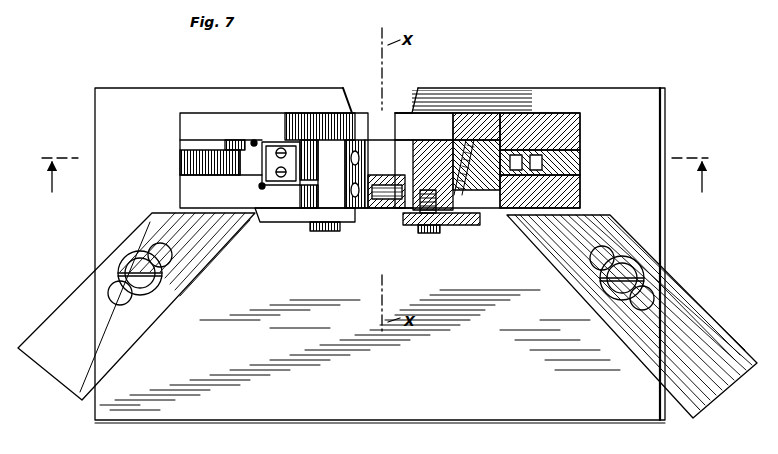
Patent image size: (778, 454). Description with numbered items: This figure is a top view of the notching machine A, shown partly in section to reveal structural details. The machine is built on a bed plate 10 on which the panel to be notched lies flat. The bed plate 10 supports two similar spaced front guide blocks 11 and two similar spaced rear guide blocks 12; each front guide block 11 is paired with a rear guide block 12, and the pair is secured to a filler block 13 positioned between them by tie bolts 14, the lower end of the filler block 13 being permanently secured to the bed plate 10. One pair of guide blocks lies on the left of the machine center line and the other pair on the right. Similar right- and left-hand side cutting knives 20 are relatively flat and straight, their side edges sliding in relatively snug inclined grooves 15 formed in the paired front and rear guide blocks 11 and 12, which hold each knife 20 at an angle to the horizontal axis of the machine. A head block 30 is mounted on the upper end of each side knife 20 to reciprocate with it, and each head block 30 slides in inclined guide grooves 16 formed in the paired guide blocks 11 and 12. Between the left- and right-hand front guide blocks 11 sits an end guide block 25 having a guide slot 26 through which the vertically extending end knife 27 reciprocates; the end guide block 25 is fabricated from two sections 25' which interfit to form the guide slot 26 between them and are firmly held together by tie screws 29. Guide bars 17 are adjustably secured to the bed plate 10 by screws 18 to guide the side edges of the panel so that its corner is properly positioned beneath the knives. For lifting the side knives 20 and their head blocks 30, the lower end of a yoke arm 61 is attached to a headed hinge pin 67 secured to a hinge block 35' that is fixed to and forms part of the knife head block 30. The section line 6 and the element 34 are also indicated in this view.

The bed plate 10 is at (352, 428).
The front guide block 11 is at (185, 187).
The rear guide block 12 is at (180, 122).
The filler block 13 is at (185, 157).
The tie bolt 14 is at (543, 128).
The inclined groove 15 is at (270, 140).
The inclined guide groove 16 is at (224, 140).
The guide bar 17 is at (70, 308).
The screw 18 is at (120, 262).
The side cutting knife 20 is at (500, 213).
The end guide block 25 is at (417, 191).
The section 25' is at (431, 196).
The guide slot 26 is at (382, 167).
The end knife 27 is at (384, 212).
The tie screw 29 is at (368, 196).
The head block 30 is at (246, 138).
The spacer 34 is at (290, 180).
The hinge block 35' is at (408, 106).
The arm 61 is at (305, 224).
The hinge pin 67 is at (325, 232).
The section line 6- 6 is at (373, 172).
The notching machine A is at (673, 94).